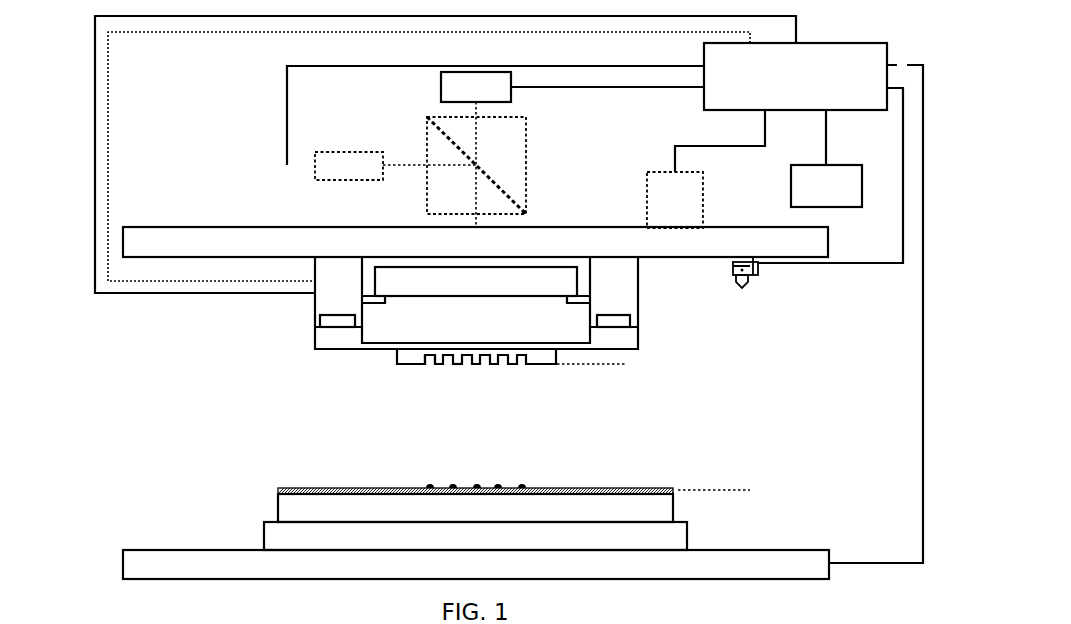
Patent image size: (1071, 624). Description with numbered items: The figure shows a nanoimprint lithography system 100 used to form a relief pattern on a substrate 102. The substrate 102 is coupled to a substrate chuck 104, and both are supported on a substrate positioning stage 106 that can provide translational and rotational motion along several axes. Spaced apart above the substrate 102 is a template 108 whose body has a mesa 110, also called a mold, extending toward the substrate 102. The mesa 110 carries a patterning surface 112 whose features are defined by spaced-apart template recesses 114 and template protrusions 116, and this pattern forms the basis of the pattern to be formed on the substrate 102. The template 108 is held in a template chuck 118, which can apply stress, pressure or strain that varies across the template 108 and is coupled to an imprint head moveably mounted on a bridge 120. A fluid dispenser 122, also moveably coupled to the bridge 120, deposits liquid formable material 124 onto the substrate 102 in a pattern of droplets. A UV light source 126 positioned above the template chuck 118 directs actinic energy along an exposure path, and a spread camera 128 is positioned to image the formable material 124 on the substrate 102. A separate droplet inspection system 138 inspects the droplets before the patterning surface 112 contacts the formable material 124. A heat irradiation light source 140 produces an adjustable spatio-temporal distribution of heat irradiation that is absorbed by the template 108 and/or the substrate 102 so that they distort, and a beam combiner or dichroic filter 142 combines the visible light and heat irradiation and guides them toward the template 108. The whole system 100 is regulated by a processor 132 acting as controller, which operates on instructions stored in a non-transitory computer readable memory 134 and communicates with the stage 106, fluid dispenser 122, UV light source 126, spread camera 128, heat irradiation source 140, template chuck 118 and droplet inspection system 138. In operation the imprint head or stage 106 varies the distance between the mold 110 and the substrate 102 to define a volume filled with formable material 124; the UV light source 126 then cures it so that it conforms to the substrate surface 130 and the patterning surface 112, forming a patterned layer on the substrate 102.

The nanoimprint lithography system 100 is at (83, 25).
The substrate 102 is at (454, 518).
The substrate chuck 104 is at (454, 545).
The substrate positioning stage 106 is at (454, 575).
The template 108 is at (320, 349).
The mesa 110 is at (542, 365).
The patterning surface 112 is at (617, 365).
The template recesses 114 is at (431, 368).
The template protrusions 116 is at (460, 369).
The template chuck 118 is at (315, 317).
The bridge 120 is at (454, 251).
The fluid dispenser 122 is at (760, 273).
The formable material 124 is at (452, 486).
The UV light source 126 is at (454, 291).
The spread camera 128 is at (454, 98).
The substrate surface 130 is at (740, 490).
The processor 132 is at (773, 89).
The non-transitory computer readable memory 134 is at (804, 198).
The droplet inspection system 138 is at (653, 211).
The heat irradiation light source 140 is at (327, 176).
The dichroic filter 142 is at (427, 117).